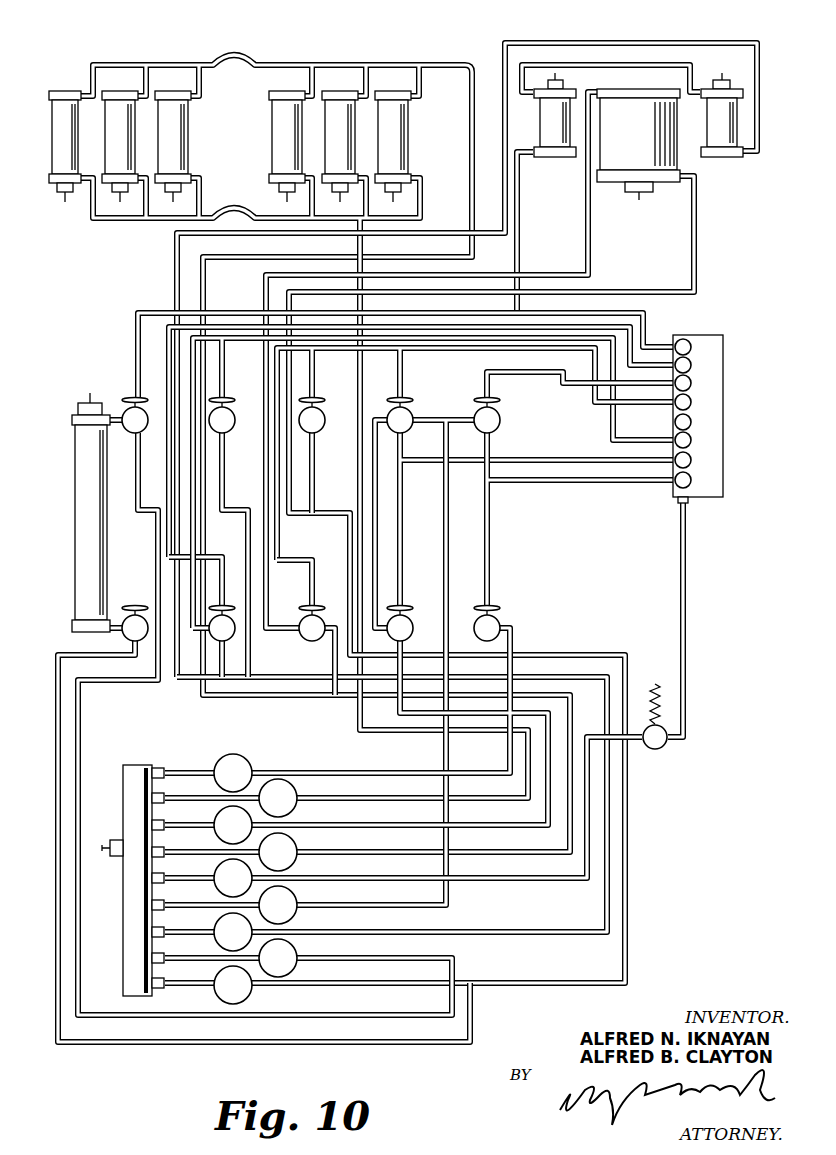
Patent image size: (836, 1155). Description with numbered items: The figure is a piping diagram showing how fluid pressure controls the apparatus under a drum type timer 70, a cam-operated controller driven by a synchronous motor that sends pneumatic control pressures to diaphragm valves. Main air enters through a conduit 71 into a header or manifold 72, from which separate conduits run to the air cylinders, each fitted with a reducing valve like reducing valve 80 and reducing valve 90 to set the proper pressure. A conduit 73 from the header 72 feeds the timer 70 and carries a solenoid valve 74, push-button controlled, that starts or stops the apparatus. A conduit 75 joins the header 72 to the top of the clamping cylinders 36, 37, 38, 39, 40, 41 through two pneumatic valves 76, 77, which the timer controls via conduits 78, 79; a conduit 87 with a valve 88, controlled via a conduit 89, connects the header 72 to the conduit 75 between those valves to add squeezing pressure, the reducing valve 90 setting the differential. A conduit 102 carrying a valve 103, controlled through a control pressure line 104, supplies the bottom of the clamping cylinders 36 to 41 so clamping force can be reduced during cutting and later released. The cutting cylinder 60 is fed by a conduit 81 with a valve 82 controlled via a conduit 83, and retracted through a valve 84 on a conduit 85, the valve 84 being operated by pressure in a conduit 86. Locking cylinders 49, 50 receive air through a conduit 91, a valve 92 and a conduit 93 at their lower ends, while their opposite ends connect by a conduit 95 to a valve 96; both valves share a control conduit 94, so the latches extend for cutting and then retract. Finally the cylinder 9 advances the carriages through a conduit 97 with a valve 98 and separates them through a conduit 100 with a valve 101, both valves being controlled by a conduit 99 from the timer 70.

The cylinder 9 is at (636, 105).
The cylinder 36 is at (50, 95).
The cylinder 37 is at (118, 100).
The cylinder 38 is at (172, 100).
The cylinder 39 is at (285, 100).
The cylinder 40 is at (338, 100).
The cylinder 41 is at (392, 100).
The cylinder 49 is at (560, 96).
The cylinder 50 is at (725, 100).
The cylinder 60 is at (80, 520).
The timer 70 is at (727, 448).
The conduit 71 is at (108, 845).
The header or manifold 72 is at (140, 772).
The conduit 73 is at (590, 858).
The valve 74 is at (666, 745).
The conduit 75 is at (470, 64).
The valve 76 is at (499, 620).
The valve 77 is at (499, 426).
The conduit 78 is at (608, 484).
The conduit 79 is at (668, 383).
The reducing valve 80 is at (233, 754).
The conduit 81 is at (118, 1047).
The valve 82 is at (122, 608).
The conduit 83 is at (166, 372).
The valve 84 is at (122, 398).
The conduit 85 is at (75, 750).
The conduit 86 is at (133, 312).
The conduit 87 is at (330, 798).
The valve 88 is at (410, 412).
The conduit 89 is at (638, 442).
The reducing valve 90 is at (268, 790).
The conduit 91 is at (530, 932).
The valve 92 is at (226, 641).
The conduit 93 is at (752, 152).
The conduit 94 is at (198, 556).
The conduit 95 is at (535, 62).
The valve 96 is at (218, 434).
The conduit 97 is at (592, 228).
The valve 98 is at (305, 638).
The conduit 99 is at (280, 538).
The conduit 100 is at (697, 228).
The valve 101 is at (325, 428).
The conduit 102 is at (108, 222).
The valve 103 is at (412, 622).
The conduit 104 is at (403, 478).